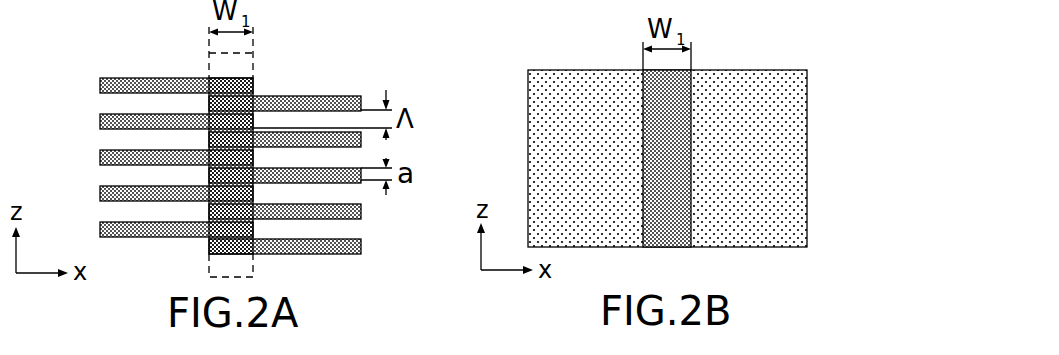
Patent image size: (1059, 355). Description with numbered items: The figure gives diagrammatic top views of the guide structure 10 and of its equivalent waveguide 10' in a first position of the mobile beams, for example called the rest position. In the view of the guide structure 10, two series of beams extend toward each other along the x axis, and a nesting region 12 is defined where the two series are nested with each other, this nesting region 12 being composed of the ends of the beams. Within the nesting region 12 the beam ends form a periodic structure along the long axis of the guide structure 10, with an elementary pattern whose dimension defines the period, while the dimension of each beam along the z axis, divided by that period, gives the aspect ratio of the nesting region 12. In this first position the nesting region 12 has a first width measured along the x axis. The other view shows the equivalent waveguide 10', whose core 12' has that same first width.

In FIG. 2A, the guide structure 10 is at (213, 127).
In FIG. 2A, the nesting region 12 is at (197, 152).
In FIG. 2B, the equivalent waveguide 10' is at (677, 130).
In FIG. 2B, the core 12' is at (628, 130).